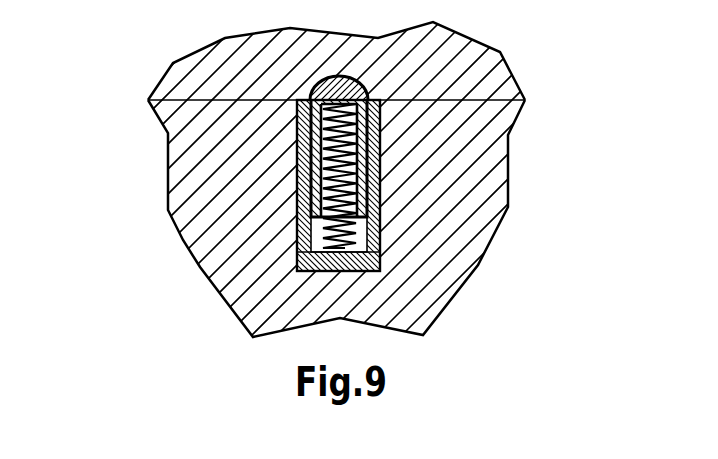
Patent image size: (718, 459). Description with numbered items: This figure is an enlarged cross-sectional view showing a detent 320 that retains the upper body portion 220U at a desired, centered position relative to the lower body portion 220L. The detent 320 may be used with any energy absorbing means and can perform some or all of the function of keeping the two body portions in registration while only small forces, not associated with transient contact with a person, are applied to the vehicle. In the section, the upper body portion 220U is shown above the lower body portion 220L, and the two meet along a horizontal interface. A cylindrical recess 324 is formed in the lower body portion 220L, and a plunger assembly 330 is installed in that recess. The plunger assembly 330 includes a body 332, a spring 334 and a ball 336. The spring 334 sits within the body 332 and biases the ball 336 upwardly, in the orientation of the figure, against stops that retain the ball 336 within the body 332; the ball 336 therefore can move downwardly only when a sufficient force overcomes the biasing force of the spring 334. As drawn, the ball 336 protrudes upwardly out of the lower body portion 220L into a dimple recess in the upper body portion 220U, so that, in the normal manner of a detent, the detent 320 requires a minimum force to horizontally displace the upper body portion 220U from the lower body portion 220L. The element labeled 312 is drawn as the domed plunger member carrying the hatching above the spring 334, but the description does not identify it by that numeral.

The upper body portion 220U is at (462, 78).
The lower body portion 220L is at (433, 262).
The detent 320 is at (603, 77).
The plunger assembly 330 is at (527, 270).
The pin 312 is at (362, 88).
The ball 336 is at (330, 87).
The body 332 is at (302, 182).
The cylindrical recess 324 is at (296, 237).
The spring 334 is at (296, 256).